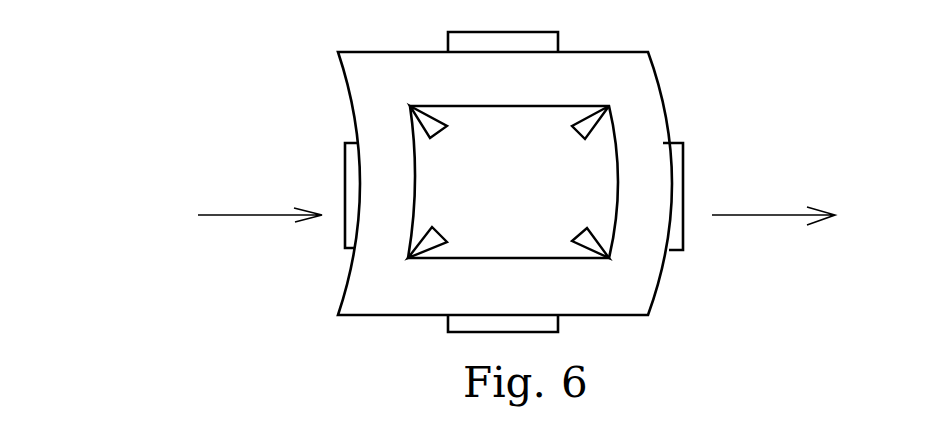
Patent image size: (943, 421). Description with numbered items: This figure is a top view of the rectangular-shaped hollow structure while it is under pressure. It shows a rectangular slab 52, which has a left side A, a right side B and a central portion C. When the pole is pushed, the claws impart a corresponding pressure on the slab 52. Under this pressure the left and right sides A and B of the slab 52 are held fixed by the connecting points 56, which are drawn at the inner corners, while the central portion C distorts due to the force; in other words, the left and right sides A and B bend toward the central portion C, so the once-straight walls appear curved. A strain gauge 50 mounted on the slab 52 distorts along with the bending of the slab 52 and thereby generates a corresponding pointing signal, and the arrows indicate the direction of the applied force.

The rectangular slab 52 is at (370, 85).
The strain gauge 50 is at (353, 207).
The connecting point 56 is at (592, 123).
The left side A is at (392, 51).
The right side B is at (390, 317).
The central portion C is at (392, 192).